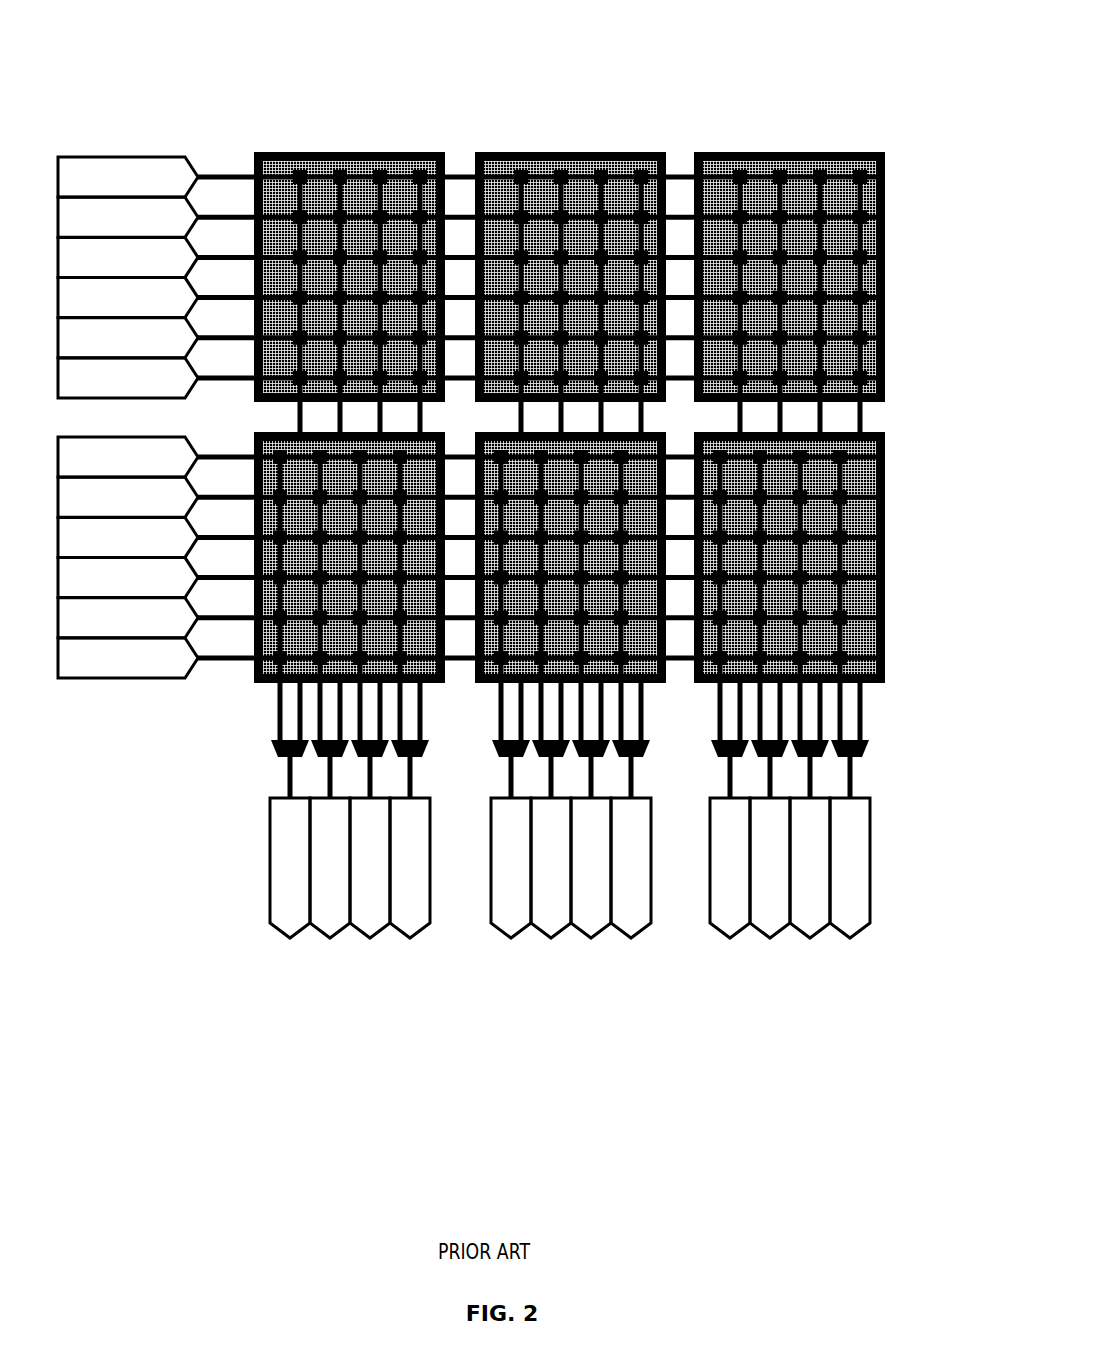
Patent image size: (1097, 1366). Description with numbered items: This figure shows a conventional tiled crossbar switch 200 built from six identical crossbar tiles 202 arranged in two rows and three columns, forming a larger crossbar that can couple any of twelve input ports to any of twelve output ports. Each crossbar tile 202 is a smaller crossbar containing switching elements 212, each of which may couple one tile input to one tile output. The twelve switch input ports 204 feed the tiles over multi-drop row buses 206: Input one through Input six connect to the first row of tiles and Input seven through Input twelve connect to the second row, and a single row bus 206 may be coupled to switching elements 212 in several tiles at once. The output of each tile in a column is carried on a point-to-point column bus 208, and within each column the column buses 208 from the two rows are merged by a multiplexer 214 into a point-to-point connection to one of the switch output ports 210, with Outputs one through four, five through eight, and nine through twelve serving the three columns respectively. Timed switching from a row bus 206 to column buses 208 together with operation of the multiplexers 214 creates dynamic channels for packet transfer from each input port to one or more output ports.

The tiled crossbar switch 200 is at (846, 70).
The crossbar tile 202 is at (478, 152).
The switch input port 204 is at (141, 132).
The row bus 206 is at (226, 256).
The column bus 208 is at (822, 730).
The switch output port 210 is at (897, 886).
The switching element 212 is at (637, 172).
The multiplexer 214 is at (272, 741).